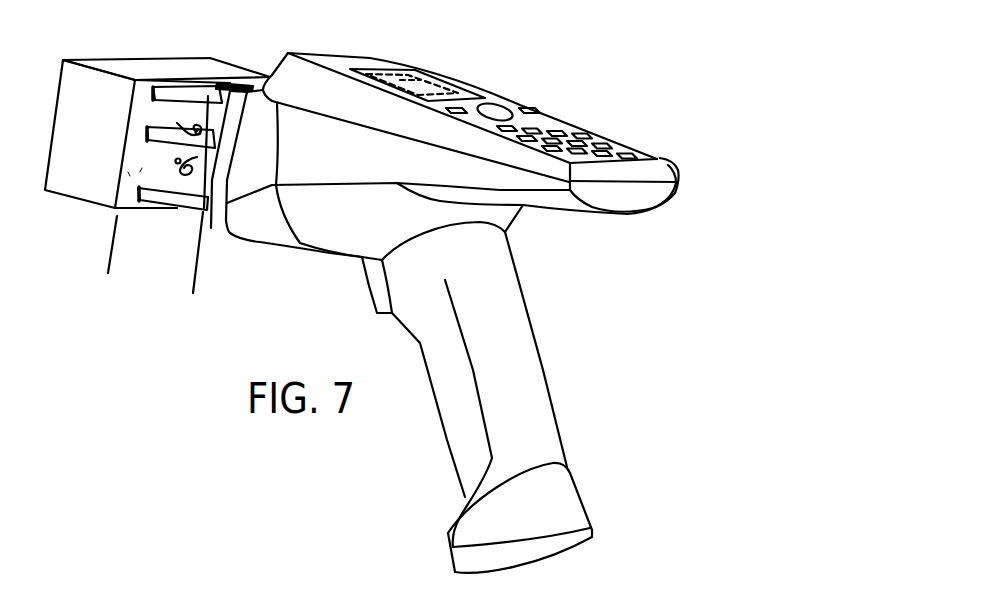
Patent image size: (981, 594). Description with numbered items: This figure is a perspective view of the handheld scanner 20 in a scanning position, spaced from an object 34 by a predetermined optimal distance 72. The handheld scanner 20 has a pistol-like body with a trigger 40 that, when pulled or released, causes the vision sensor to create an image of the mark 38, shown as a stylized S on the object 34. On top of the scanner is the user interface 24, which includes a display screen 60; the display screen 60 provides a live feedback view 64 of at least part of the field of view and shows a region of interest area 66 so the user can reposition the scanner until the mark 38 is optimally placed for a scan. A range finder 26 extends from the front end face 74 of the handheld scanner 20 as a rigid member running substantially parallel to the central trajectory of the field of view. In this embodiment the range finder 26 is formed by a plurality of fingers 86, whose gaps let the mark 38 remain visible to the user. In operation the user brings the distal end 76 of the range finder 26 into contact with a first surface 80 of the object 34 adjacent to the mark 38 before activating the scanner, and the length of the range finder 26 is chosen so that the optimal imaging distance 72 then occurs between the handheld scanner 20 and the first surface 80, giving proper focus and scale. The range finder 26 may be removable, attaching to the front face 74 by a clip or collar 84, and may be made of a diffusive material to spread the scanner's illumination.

The handheld scanner 20 is at (566, 62).
The user interface 24 is at (397, 54).
The range finder 26 is at (192, 88).
The object 34 is at (137, 58).
The mark 38 is at (177, 123).
The trigger 40 is at (370, 285).
The display screen 60 is at (440, 80).
The live feedback view 64 is at (380, 70).
The region of interest (ROI) area 66 is at (392, 81).
The predetermined optimal distance 72 is at (197, 263).
The front end face 74 is at (205, 217).
The distal end 76 is at (130, 172).
The first surface 80 is at (137, 172).
The clip or collar 84 is at (212, 228).
The fingers 86 is at (180, 176).